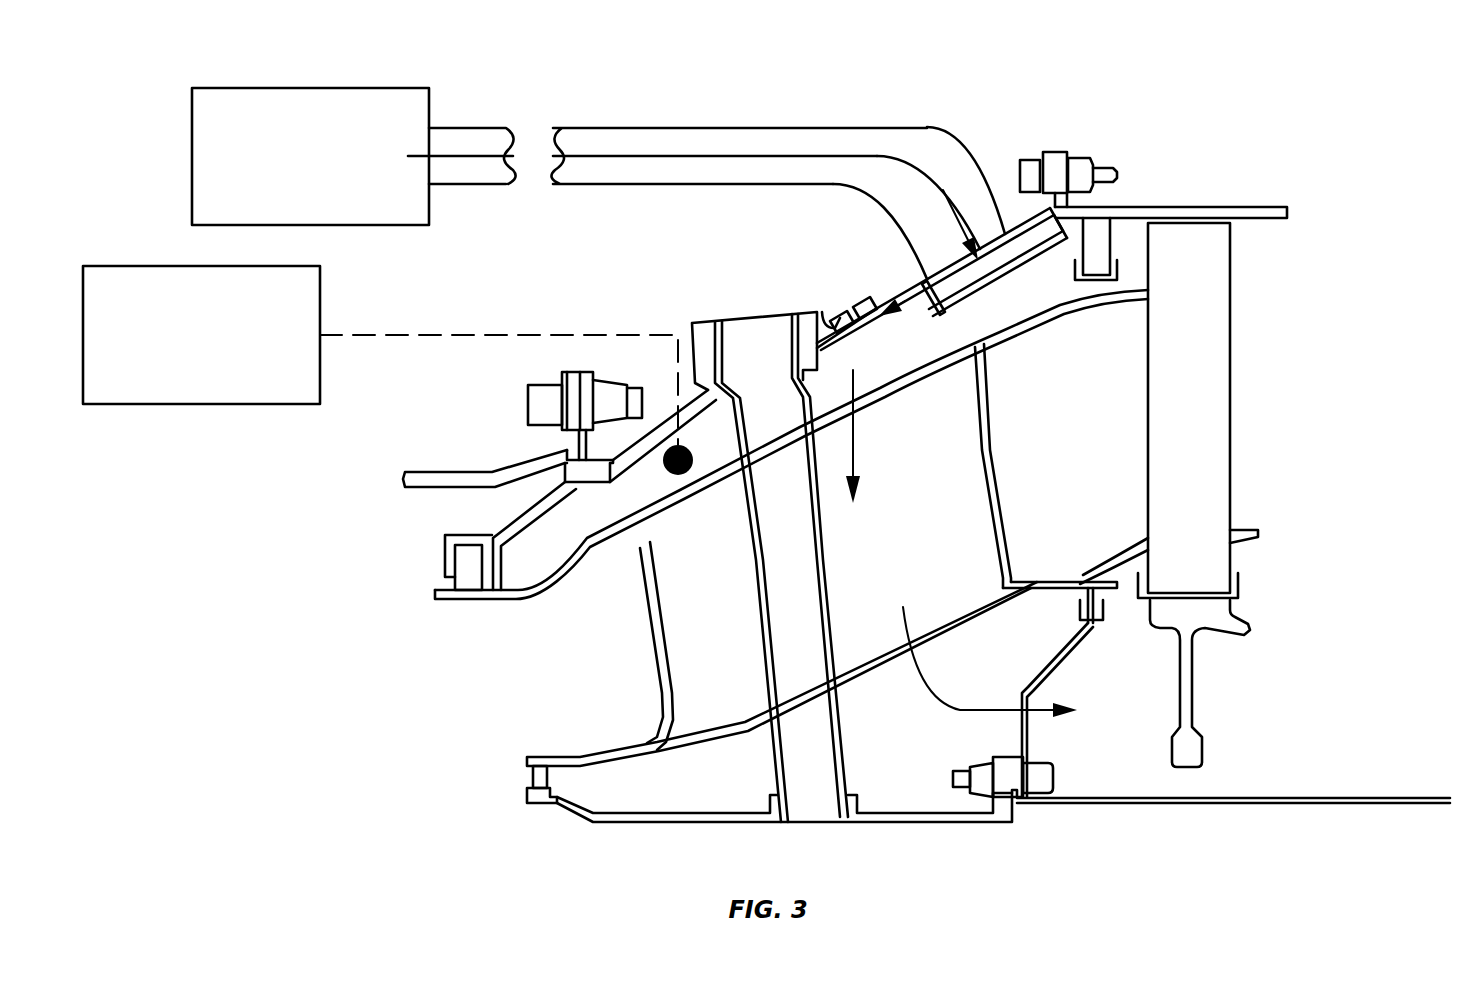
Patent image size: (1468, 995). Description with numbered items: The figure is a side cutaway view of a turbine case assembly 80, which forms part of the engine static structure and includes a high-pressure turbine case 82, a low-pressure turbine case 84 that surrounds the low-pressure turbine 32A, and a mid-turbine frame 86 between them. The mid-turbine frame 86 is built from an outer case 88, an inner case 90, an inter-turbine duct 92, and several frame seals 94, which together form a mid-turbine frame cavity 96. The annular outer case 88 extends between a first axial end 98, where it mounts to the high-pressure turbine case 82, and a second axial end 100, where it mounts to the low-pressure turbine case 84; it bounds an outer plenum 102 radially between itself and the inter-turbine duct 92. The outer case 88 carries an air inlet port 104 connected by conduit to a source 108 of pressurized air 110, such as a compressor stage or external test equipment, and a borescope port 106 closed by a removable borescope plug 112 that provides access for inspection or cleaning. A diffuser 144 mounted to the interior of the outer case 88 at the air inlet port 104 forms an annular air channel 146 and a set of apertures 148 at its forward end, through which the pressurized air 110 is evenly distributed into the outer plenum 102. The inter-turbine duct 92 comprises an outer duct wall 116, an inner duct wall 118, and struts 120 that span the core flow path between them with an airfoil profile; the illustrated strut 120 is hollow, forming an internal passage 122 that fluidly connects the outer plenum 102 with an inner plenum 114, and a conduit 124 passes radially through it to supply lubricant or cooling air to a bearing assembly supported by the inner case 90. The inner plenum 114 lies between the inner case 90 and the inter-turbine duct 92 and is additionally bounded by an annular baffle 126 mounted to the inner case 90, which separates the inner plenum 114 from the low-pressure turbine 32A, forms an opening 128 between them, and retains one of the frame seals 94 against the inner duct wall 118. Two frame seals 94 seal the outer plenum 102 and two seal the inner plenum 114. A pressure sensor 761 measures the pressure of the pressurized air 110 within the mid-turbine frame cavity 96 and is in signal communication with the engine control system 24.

The source of pressurized air 108 is at (305, 88).
The engine control system 24 is at (200, 404).
The pressurized air 110 is at (712, 155).
The air inlet port 104 is at (995, 237).
The turbine case assembly 80 is at (1232, 110).
The low-pressure turbine case 84 is at (1172, 205).
The second axial end 100 is at (1052, 198).
The frame seal 94 is at (1110, 238).
The diffuser 144 is at (1056, 280).
The annular air channel 146 is at (990, 290).
The aperture 148 is at (930, 323).
The borescope plug 112 is at (835, 306).
The outer case 88 is at (890, 288).
The borescope port 106 is at (837, 307).
The outer plenum 102 is at (862, 362).
The conduit 124 is at (752, 645).
The internal passage 122 is at (931, 581).
The inter-turbine duct 92 is at (633, 663).
The first axial end 98 is at (582, 438).
The high-pressure turbine case 82 is at (420, 490).
The pressure sensor 761 is at (680, 477).
The outer duct wall 116 is at (578, 576).
The inner duct wall 118 is at (615, 747).
The mid-turbine frame 86 is at (480, 735).
The inner plenum 114 is at (714, 786).
The inner case 90 is at (680, 823).
The mid-turbine frame cavity 96 is at (975, 448).
The strut 120 is at (1012, 508).
The opening 128 is at (1018, 692).
The baffle 126 is at (1030, 738).
The low-pressure turbine 32A is at (1262, 443).